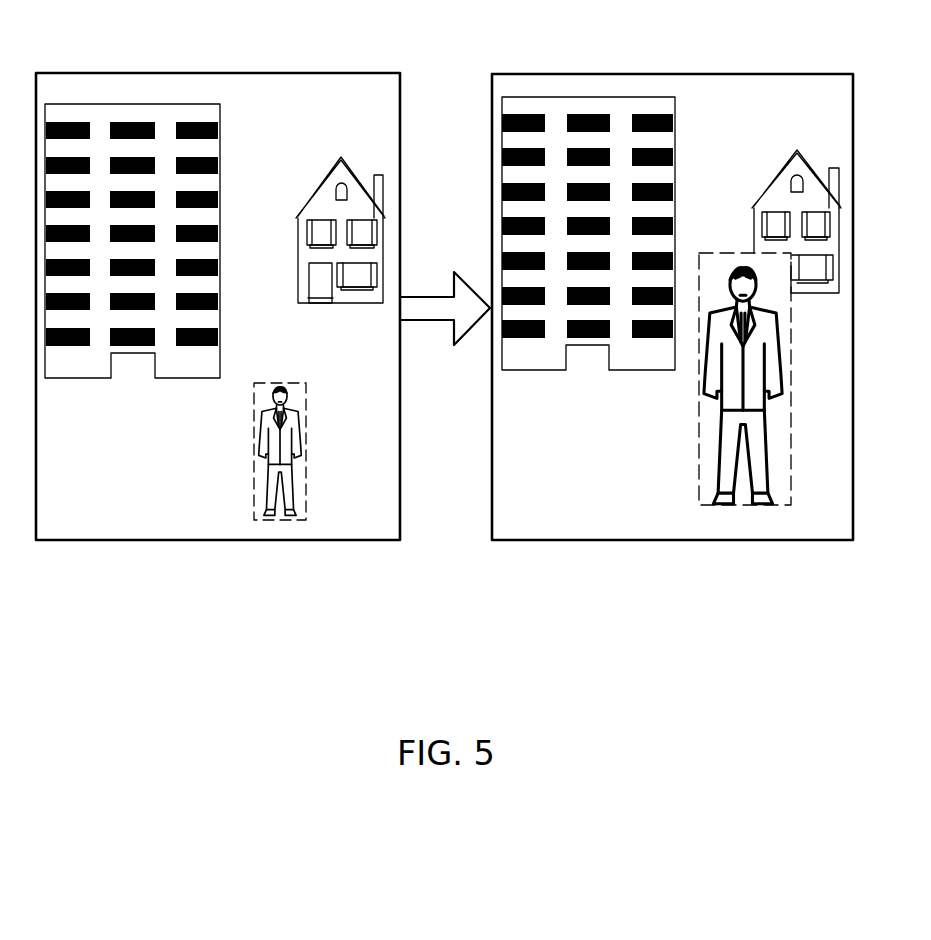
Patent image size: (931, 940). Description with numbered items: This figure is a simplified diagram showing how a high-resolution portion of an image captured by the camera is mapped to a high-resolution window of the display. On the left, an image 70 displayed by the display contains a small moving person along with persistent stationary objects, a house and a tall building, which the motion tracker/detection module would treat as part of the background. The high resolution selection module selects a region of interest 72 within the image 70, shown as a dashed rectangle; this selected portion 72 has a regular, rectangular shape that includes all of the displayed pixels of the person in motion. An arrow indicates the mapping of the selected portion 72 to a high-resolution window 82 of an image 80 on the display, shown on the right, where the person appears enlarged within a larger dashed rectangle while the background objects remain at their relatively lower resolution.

The image 70 is at (220, 73).
The image 80 is at (672, 74).
The region of interest 72 is at (277, 383).
The high-resolution window 82 is at (699, 468).